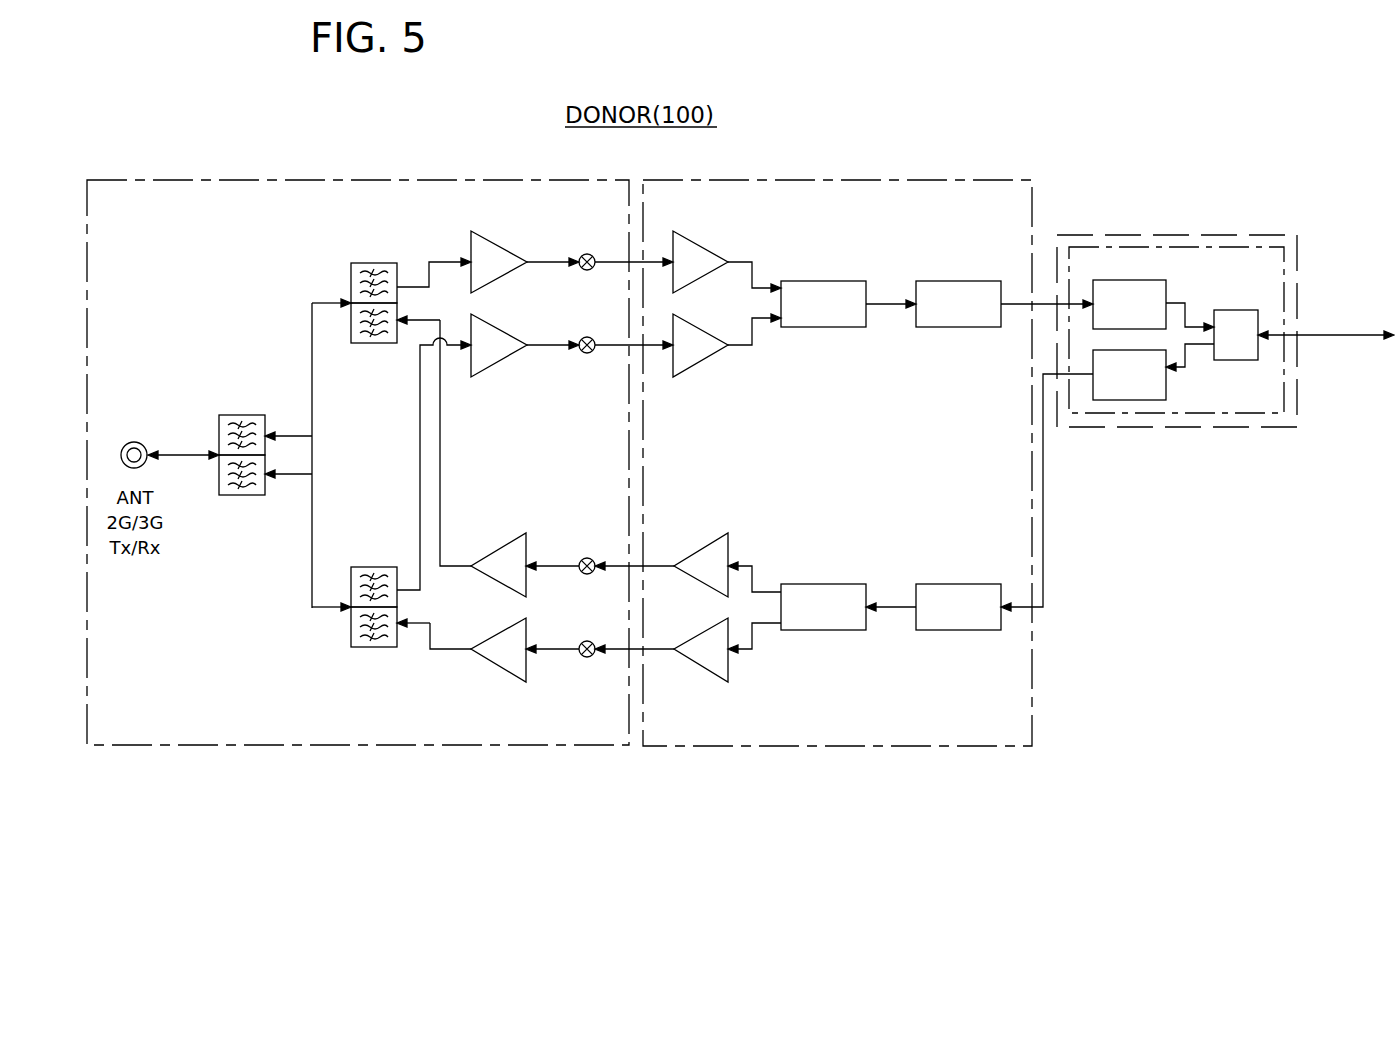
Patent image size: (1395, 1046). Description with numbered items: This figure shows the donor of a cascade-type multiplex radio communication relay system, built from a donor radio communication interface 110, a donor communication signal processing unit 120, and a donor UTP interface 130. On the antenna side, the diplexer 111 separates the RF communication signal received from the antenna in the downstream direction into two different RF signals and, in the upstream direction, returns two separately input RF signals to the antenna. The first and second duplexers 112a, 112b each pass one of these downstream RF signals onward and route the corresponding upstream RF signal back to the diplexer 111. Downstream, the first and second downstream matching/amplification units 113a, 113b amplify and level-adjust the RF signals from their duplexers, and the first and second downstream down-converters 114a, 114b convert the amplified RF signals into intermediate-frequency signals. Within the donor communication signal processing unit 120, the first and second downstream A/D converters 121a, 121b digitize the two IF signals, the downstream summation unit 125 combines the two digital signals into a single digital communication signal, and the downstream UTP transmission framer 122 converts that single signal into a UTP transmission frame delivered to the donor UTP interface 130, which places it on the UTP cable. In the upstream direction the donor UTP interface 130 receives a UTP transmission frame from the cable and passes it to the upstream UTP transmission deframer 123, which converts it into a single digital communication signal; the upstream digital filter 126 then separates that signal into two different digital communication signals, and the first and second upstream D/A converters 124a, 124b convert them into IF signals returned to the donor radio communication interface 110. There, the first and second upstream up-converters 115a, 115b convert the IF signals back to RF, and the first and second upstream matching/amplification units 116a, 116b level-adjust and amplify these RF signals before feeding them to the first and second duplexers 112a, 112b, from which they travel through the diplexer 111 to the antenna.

The donor radio communication interface 110 is at (357, 746).
The diplexer 111 is at (243, 415).
The first duplexer 112a is at (375, 345).
The second duplexer 112b is at (375, 648).
The first downstream matching/amplification unit 113a is at (503, 247).
The second downstream matching/amplification unit 113b is at (503, 361).
The first downstream down-converter 114a is at (587, 271).
The second downstream down-converter 114b is at (587, 354).
The first upstream up-converter 115a is at (587, 575).
The second upstream up-converter 115b is at (587, 658).
The first upstream matching/amplification unit 116a is at (503, 551).
The second upstream matching/amplification unit 116b is at (503, 664).
The donor communication signal processing unit 120 is at (837, 746).
The first downstream A/D converter 121a is at (708, 247).
The second downstream A/D converter 121b is at (708, 363).
The downstream UTP transmission framer 122 is at (955, 327).
The upstream UTP transmission deframer 123 is at (955, 630).
The first upstream D/A converter 124a is at (708, 546).
The second upstream D/A converter 124b is at (708, 663).
The downstream summation unit 125 is at (823, 327).
The upstream digital filter 126 is at (823, 630).
The donor UTP interface 130 is at (1177, 427).